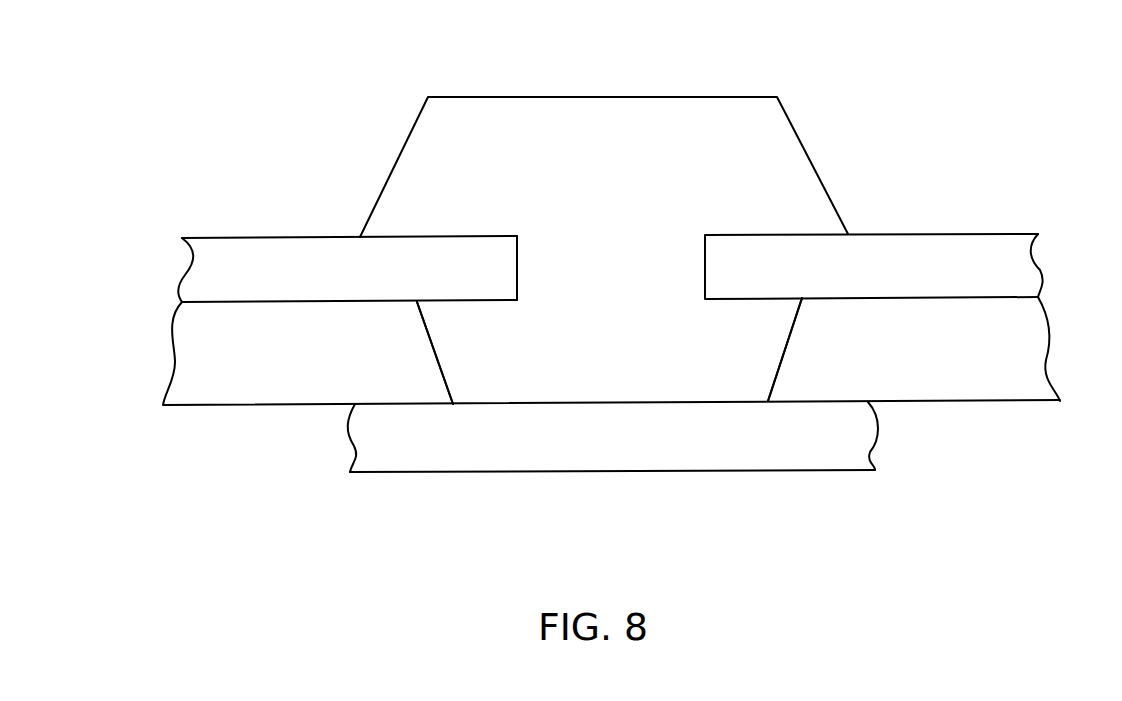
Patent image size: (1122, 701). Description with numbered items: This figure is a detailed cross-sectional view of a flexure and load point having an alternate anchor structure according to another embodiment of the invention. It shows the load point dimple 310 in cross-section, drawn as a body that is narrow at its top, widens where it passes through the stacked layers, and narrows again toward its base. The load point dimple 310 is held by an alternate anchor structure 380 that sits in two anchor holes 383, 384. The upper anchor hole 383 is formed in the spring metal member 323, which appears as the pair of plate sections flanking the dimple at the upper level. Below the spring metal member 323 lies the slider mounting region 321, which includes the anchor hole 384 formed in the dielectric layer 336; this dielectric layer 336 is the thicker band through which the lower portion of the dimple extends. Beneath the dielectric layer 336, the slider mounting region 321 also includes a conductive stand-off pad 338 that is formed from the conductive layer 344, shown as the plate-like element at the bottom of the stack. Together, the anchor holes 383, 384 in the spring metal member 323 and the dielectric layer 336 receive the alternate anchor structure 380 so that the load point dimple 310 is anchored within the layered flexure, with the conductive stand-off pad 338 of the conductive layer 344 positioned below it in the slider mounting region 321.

The load point dimple 310 is at (802, 136).
The slider mounting region 321 is at (850, 543).
The spring metal member 323 is at (928, 234).
The dielectric layer 336 is at (250, 404).
The conductive stand-off pad 338 is at (350, 445).
The conductive layer 344 is at (432, 452).
The alternate anchor structure 380 is at (792, 333).
The anchor hole 383 is at (517, 267).
The anchor hole 384 is at (440, 355).